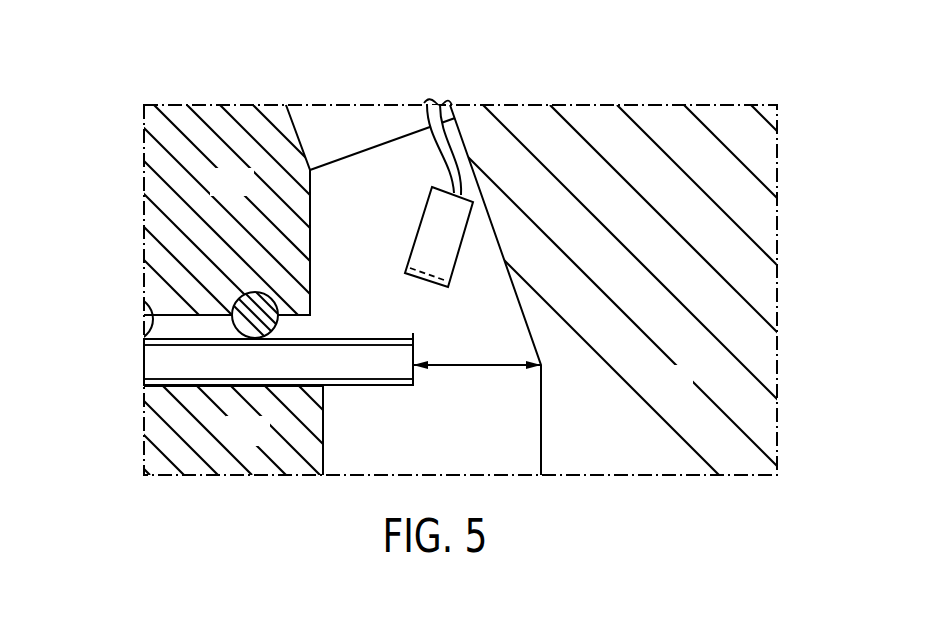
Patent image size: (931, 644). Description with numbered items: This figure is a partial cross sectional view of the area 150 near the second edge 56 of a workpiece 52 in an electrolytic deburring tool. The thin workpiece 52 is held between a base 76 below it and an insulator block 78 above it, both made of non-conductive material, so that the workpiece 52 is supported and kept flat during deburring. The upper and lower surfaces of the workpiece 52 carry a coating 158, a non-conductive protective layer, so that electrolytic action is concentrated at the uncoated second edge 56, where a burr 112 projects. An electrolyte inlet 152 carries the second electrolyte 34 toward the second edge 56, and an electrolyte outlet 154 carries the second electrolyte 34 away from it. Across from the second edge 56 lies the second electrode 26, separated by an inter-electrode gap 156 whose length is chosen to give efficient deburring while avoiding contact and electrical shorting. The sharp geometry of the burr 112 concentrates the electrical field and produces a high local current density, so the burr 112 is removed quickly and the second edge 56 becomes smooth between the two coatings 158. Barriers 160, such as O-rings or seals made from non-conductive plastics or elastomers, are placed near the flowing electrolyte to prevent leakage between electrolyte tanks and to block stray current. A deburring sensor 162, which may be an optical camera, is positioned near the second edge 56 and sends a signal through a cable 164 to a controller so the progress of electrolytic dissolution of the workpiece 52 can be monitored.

The area 150 is at (676, 50).
The electrolyte inlet 152 is at (363, 176).
The electrolyte outlet 154 is at (402, 451).
The inter-electrode gap 156 is at (498, 364).
The coating 158 is at (352, 340).
The barriers 160 is at (242, 304).
The deburring sensor 162 is at (421, 247).
The cable 164 is at (426, 106).
The second electrode 26 is at (657, 393).
The second electrolyte 34 is at (360, 242).
The workpiece 52 is at (274, 374).
The second edge 56 is at (420, 388).
The base 76 is at (234, 444).
The insulator block 78 is at (219, 194).
The burr 112 is at (414, 337).